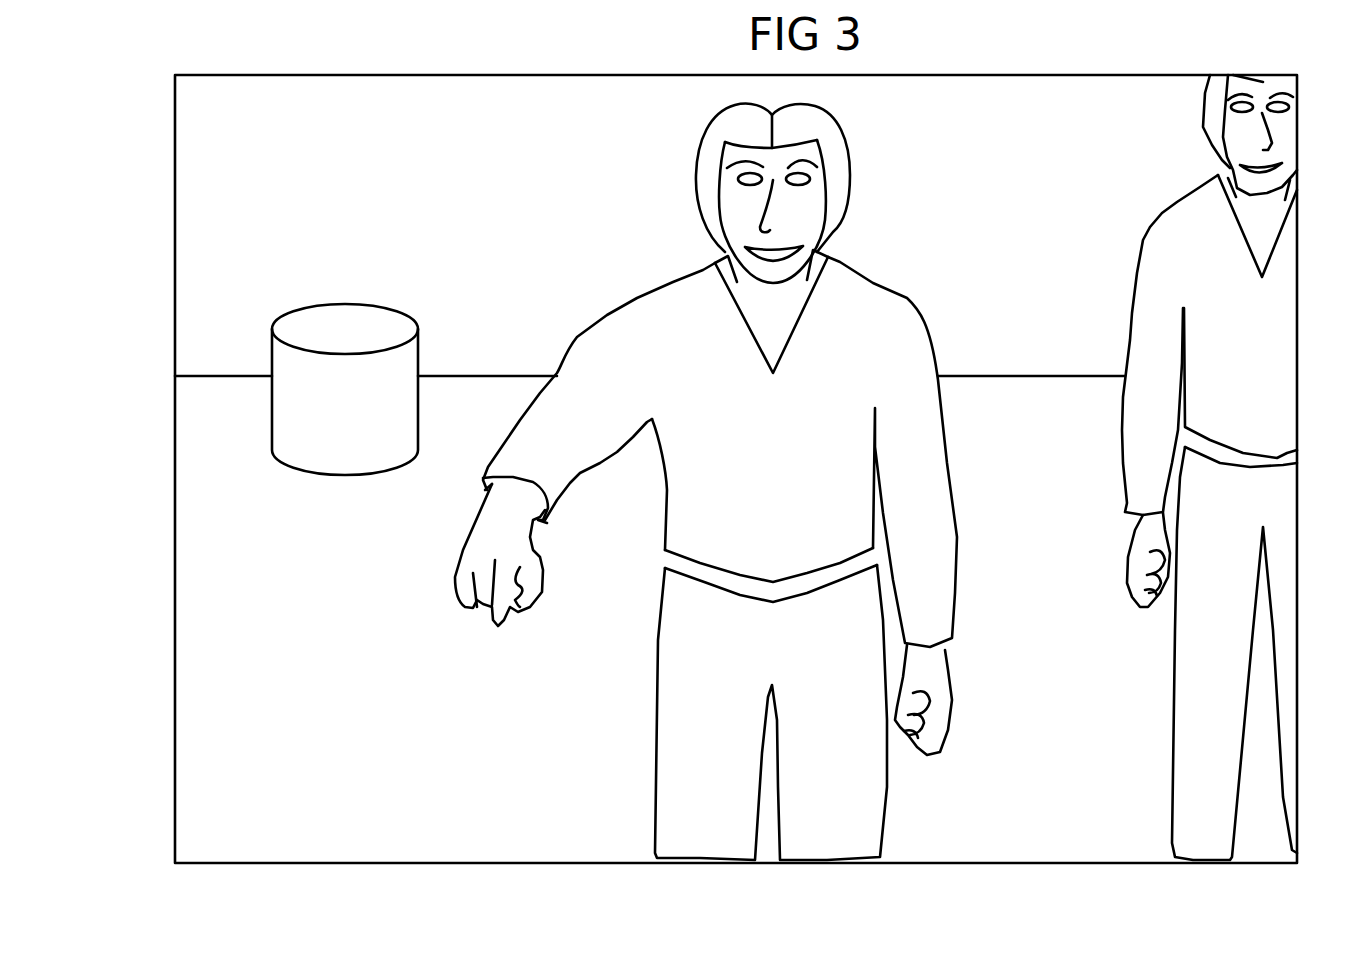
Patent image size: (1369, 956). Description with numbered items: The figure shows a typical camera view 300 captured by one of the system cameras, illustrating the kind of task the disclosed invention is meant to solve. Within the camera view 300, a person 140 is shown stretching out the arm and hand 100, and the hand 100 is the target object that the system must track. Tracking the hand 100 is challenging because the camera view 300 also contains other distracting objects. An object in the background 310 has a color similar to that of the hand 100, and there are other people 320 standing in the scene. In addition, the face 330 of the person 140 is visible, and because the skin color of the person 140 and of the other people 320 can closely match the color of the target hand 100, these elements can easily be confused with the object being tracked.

The camera view 300 is at (650, 77).
The object in the background 310 is at (348, 302).
The person 140 is at (663, 482).
The face of the user 330 is at (783, 268).
The other people 320 is at (1140, 257).
The hand 100 is at (470, 545).